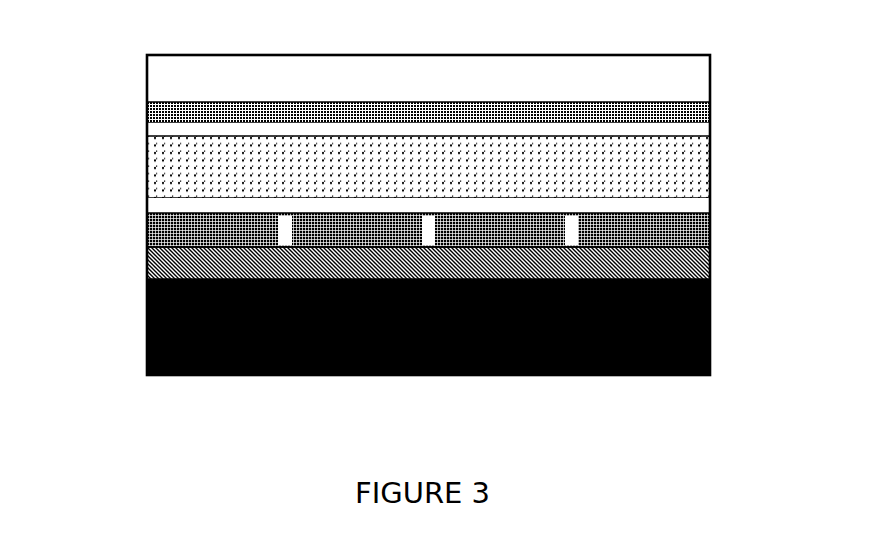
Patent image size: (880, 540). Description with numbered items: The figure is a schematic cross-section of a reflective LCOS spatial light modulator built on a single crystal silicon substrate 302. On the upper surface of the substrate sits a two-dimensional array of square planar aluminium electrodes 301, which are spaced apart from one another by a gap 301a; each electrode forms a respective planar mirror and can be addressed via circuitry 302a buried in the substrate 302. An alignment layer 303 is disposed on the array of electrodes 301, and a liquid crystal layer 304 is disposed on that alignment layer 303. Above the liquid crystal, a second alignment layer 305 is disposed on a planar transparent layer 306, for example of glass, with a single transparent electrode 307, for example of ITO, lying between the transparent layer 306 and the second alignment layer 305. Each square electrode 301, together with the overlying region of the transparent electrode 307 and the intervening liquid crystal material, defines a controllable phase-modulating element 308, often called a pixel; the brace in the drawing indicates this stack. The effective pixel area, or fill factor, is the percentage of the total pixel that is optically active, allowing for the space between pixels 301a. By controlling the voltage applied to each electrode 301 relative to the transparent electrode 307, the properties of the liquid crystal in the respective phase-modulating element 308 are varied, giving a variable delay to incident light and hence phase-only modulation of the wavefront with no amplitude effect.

The square planar aluminium electrodes 301 is at (712, 232).
The gap 301a is at (576, 226).
The single crystal silicon substrate 302 is at (147, 345).
The circuitry 302a is at (147, 262).
The alignment layer 303 is at (690, 205).
The liquid crystal layer 304 is at (690, 172).
The second alignment layer 305 is at (690, 128).
The planar transparent layer 306 is at (690, 77).
The transparent electrode 307 is at (690, 110).
The phase-modulating element 308 is at (126, 52).